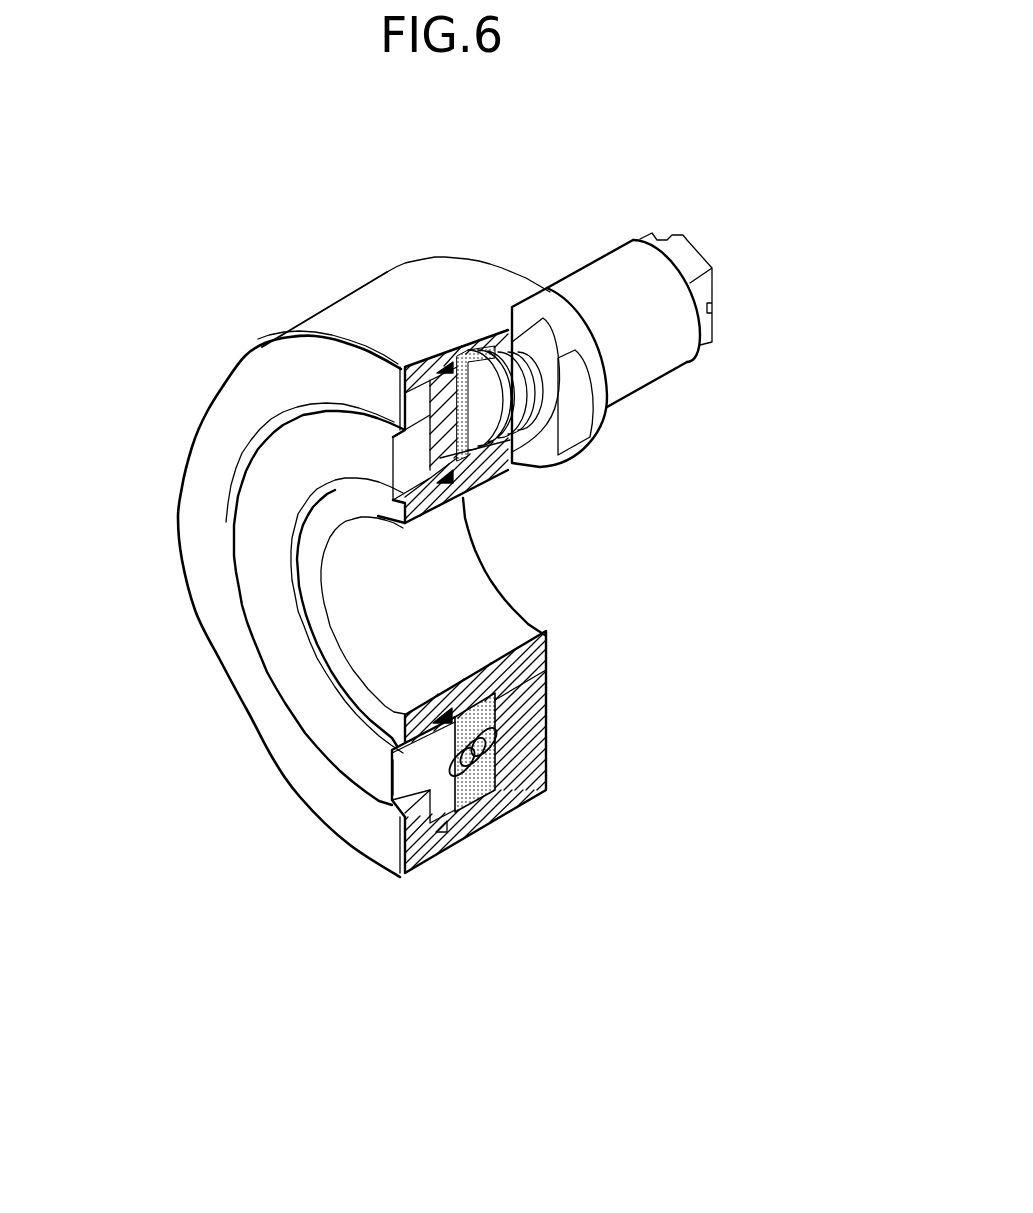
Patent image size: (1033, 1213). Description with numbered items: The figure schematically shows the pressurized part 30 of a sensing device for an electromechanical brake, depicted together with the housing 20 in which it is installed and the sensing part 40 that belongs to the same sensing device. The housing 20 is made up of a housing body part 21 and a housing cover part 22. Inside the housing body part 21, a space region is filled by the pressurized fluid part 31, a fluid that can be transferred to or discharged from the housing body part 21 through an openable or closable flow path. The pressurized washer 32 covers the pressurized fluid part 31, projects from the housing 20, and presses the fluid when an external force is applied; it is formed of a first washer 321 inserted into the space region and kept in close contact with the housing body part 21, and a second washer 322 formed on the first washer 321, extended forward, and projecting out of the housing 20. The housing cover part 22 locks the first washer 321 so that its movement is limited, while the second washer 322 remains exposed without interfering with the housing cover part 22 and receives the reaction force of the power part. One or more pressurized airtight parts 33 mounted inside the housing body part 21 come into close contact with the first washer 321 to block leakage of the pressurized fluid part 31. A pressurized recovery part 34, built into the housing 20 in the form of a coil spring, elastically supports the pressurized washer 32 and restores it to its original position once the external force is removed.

The housing 20 is at (449, 686).
The housing body part 21 is at (449, 873).
The housing cover part 22 is at (480, 432).
The pressurized part 30 is at (404, 893).
The pressurized fluid part 31 is at (487, 820).
The pressurized washer 32 is at (349, 876).
The first washer 321 is at (404, 878).
The second washer 322 is at (388, 786).
The pressurized airtight part 33 is at (442, 830).
The pressurized recovery part 34 is at (525, 795).
The sensing part 40 is at (597, 283).